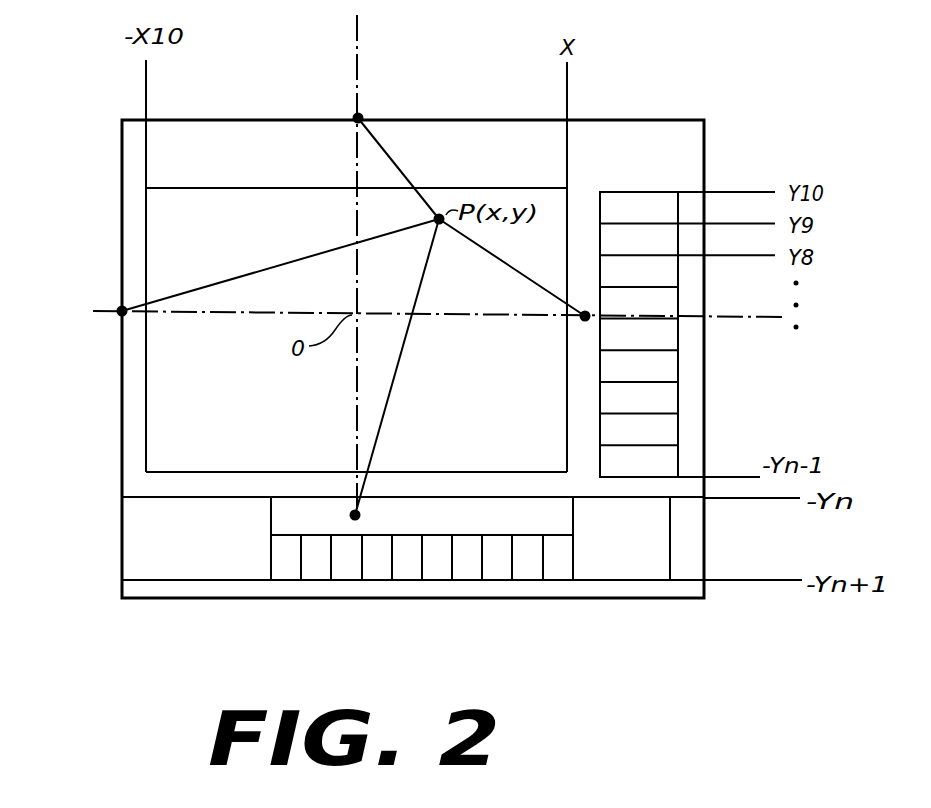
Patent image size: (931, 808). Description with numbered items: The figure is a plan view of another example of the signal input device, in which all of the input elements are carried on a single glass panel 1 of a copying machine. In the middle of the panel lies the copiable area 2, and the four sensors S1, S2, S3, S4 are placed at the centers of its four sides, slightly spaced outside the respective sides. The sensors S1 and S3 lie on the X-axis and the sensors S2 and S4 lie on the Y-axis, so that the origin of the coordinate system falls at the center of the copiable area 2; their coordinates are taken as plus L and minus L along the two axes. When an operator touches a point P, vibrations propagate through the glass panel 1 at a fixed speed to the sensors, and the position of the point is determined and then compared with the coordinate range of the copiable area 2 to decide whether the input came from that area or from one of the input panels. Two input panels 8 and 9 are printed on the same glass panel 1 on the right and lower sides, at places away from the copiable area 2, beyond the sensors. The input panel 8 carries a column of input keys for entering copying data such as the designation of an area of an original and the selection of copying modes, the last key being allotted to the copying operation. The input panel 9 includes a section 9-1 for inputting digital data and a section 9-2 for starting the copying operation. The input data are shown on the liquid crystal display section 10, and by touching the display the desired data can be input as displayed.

The glass panel 1 is at (693, 160).
The copiable area 2 is at (160, 238).
The input panel 8 is at (623, 190).
The input panel 9 is at (417, 573).
The section for inputting digital data 9-1 is at (413, 580).
The section for starting the copying operation 9-2 is at (648, 578).
The liquid crystal display section 10 is at (160, 578).
The sensor S1 is at (582, 321).
The sensor S2 is at (360, 115).
The sensor S3 is at (118, 316).
The sensor S4 is at (352, 510).